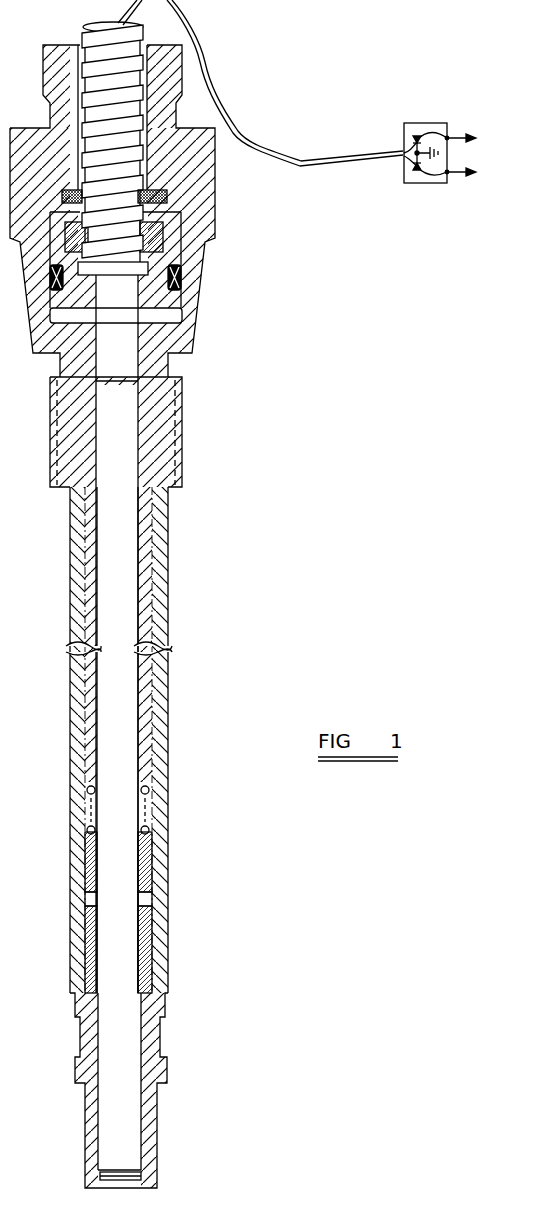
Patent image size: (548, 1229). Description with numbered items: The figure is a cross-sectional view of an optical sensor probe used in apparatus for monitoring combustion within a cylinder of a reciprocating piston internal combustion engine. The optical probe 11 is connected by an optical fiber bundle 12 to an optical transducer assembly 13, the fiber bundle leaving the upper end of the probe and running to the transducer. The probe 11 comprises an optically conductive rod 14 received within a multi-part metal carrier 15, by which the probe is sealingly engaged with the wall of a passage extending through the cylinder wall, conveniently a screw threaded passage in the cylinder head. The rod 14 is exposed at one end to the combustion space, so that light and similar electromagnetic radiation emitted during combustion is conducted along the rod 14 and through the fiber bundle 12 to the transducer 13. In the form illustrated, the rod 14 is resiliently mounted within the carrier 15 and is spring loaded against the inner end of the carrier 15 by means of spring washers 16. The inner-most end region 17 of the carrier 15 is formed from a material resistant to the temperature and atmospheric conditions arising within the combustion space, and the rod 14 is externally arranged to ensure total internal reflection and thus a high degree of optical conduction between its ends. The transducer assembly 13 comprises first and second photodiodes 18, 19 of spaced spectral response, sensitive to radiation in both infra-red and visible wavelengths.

The optical probe 11 is at (193, 587).
The optical fiber bundle 12 is at (250, 147).
The optical transducer assembly 13 is at (438, 125).
The optically conductive rod 14 is at (130, 530).
The multi-part metal carrier 15 is at (155, 447).
The spring washers 16 is at (182, 203).
The inner-most end region 17 is at (152, 1055).
The first photodiode 18 is at (415, 140).
The second photodiode 19 is at (410, 162).